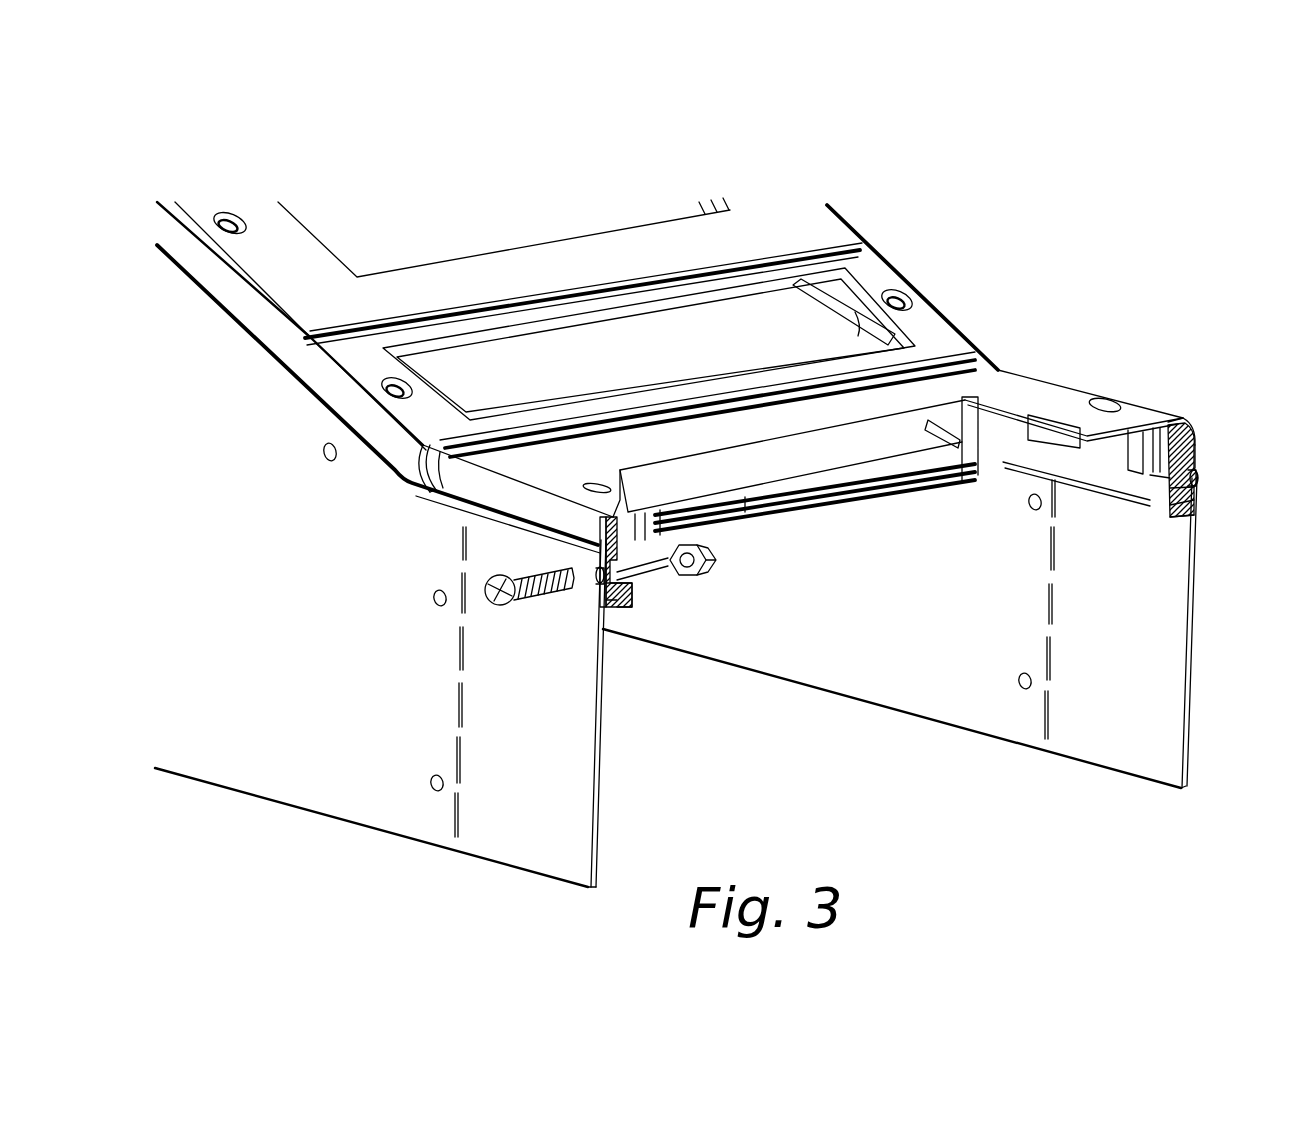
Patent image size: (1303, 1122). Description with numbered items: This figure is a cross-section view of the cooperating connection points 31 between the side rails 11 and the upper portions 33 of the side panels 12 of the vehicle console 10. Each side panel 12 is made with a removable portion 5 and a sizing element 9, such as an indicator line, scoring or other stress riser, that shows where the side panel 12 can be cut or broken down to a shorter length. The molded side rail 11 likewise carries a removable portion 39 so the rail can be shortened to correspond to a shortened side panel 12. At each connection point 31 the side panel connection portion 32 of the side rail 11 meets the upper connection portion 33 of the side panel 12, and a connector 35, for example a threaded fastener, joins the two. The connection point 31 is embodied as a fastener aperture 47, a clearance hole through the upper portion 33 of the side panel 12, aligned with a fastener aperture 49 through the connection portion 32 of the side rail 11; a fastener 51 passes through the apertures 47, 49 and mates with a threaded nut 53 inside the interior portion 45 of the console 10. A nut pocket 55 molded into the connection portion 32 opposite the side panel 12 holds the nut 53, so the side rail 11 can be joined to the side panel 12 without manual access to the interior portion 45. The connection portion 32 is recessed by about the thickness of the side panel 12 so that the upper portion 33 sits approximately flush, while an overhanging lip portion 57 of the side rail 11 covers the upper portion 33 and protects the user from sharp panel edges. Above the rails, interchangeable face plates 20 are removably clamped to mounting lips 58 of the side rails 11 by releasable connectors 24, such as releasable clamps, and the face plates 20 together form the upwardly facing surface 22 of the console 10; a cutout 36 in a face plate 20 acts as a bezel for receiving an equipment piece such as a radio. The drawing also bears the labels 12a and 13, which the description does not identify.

The removable portion 5 is at (546, 862).
The sizing element 9 is at (453, 830).
The console 10 is at (548, 201).
The side rail 11 is at (290, 352).
The side panel 12 is at (290, 684).
The tile edge 12a is at (418, 848).
The hole 13 is at (433, 596).
The face plate 20 is at (865, 272).
The upwardly facing surface 22 is at (1032, 272).
The releasable connector 24 is at (908, 308).
The cooperating connection point 31 is at (334, 462).
The side panel connection portion 32 is at (633, 594).
The upper connection portion 33 is at (490, 559).
The connector 35 is at (494, 606).
The cutout 36 is at (598, 320).
The removable portion 39 is at (440, 500).
The interior portion 45 is at (800, 343).
The fastener aperture 47 is at (597, 582).
The fastener aperture 49 is at (619, 605).
The fastener 51 is at (536, 600).
The threaded nut 53 is at (712, 568).
The nut pocket 55 is at (640, 580).
The overhanging lip portion 57 is at (458, 512).
The mounting lip 58 is at (617, 473).